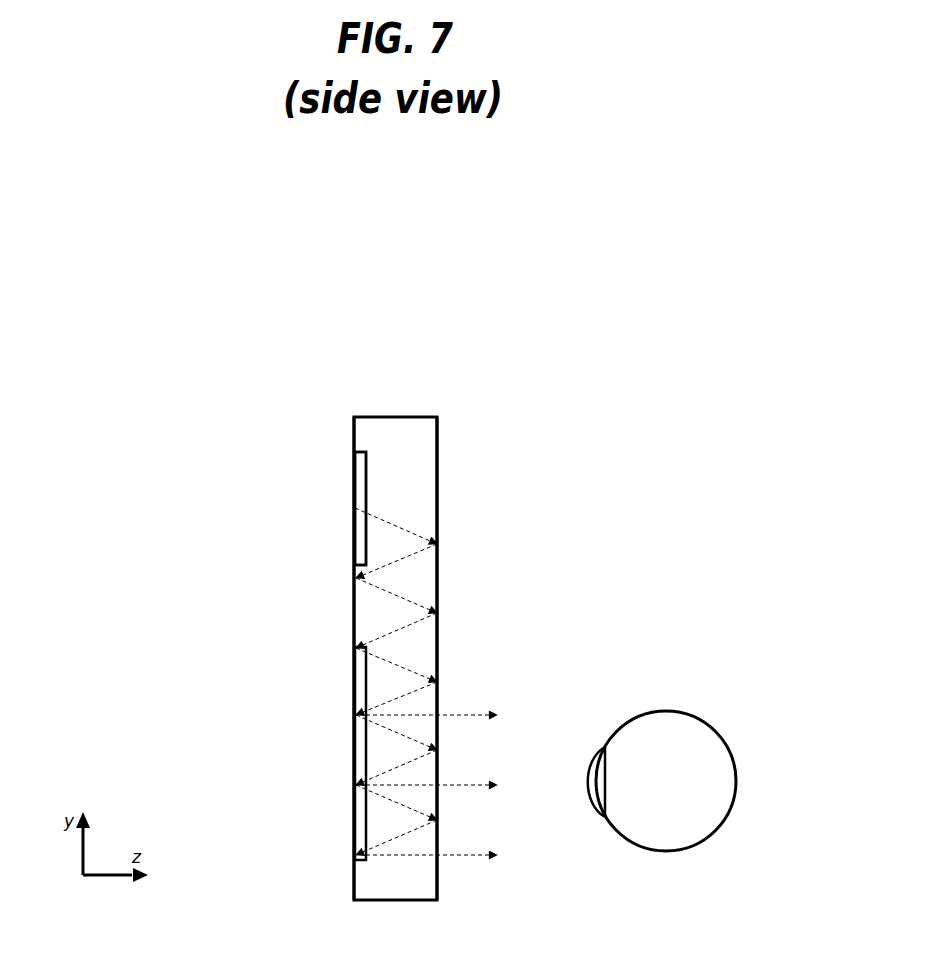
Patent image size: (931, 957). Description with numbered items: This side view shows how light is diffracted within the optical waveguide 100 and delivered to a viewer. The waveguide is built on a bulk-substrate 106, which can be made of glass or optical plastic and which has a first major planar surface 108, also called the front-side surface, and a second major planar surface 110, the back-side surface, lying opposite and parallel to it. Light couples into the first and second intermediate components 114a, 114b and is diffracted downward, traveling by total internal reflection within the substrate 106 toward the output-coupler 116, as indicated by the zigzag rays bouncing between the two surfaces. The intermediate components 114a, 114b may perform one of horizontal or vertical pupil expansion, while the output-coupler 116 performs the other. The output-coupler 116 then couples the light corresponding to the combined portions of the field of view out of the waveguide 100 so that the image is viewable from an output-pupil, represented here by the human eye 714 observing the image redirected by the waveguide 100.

The optical waveguide 100 is at (422, 290).
The bulk-substrate 106 is at (392, 422).
The first major planar surface 108 is at (442, 442).
The second major planar surface 110 is at (352, 425).
The first intermediate component 114a is at (353, 482).
The second intermediate component 114b is at (360, 508).
The output-coupler 116 is at (355, 833).
The human eye 714 is at (687, 735).